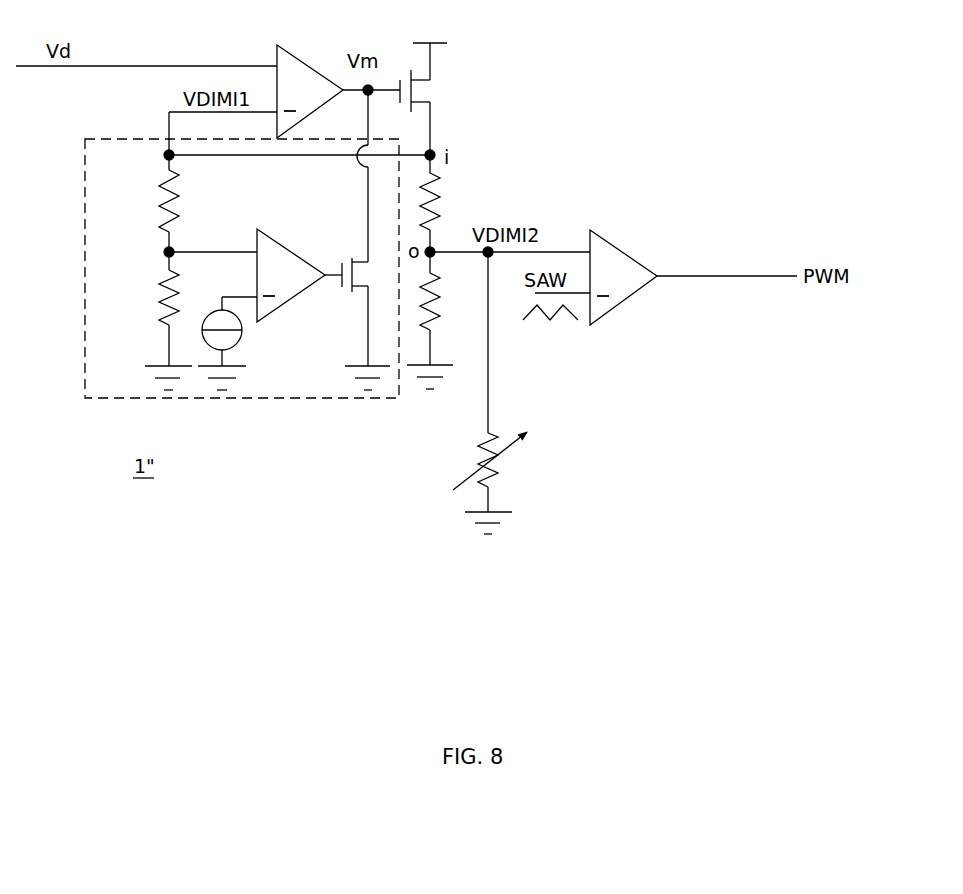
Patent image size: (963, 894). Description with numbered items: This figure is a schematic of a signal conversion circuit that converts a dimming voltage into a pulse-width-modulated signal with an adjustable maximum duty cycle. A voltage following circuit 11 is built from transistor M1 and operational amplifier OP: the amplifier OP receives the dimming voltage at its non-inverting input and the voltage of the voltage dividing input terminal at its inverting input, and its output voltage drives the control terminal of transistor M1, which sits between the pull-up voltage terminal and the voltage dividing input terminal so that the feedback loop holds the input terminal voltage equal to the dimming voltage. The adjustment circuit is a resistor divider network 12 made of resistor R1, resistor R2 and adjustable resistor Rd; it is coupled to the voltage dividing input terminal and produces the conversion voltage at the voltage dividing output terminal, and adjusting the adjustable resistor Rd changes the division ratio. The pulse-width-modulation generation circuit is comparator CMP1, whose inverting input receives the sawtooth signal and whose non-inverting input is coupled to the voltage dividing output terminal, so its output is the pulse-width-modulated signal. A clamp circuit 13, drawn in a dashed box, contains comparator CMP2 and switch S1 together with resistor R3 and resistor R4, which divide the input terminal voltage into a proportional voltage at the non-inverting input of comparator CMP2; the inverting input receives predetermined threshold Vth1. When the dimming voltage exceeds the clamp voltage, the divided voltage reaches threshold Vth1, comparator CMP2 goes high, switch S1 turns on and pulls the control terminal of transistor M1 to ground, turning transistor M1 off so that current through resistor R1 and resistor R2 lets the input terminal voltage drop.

The voltage following circuit 11 is at (468, 87).
The resistor divider network 12 is at (489, 393).
The clamp circuit 13 is at (80, 250).
The transistor M1 is at (486, 66).
The resistor R1 is at (450, 203).
The resistor R2 is at (450, 308).
The resistor R3 is at (145, 203).
The resistor R4 is at (145, 309).
The adjustable resistor Rd is at (461, 405).
The operational amplifier OP is at (310, 91).
The comparator CMP1 is at (623, 277).
The comparator CMP2 is at (290, 275).
The switch S1 is at (346, 297).
The predetermined threshold Vth1 is at (249, 331).